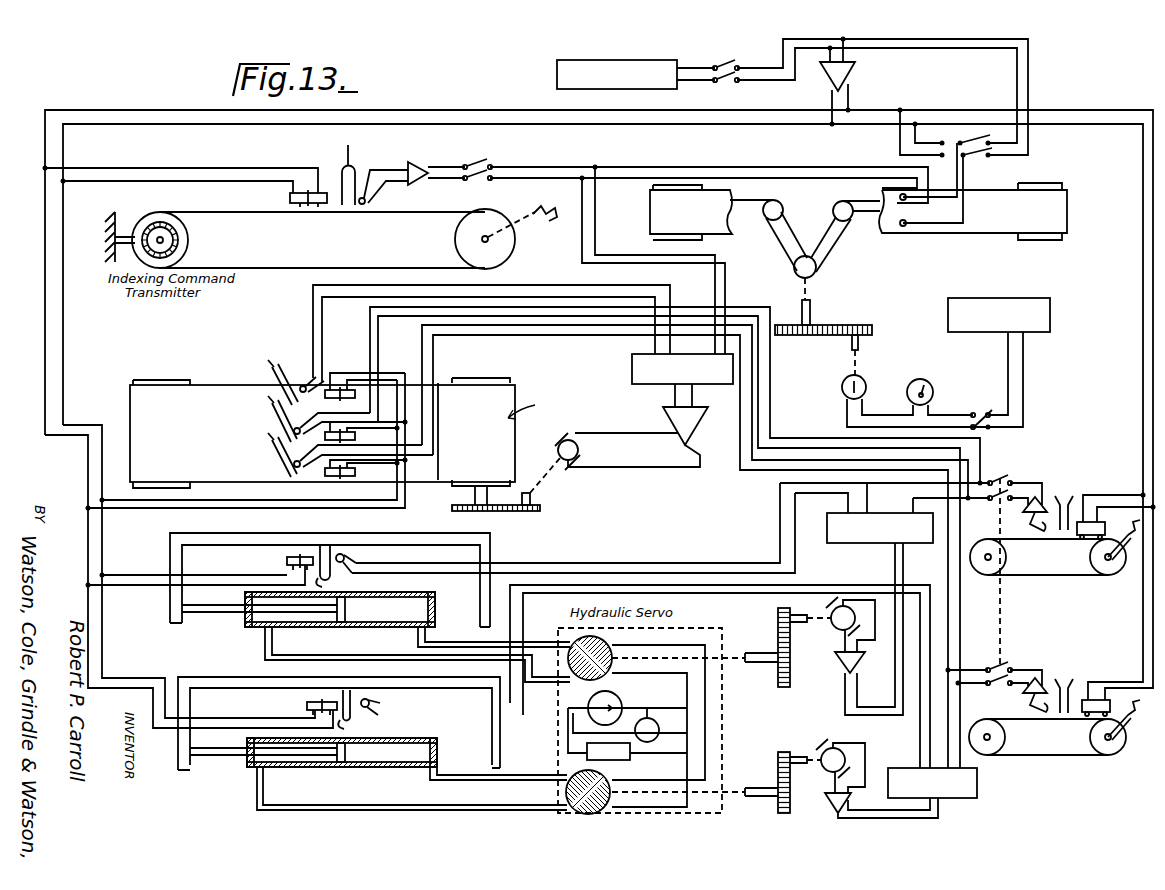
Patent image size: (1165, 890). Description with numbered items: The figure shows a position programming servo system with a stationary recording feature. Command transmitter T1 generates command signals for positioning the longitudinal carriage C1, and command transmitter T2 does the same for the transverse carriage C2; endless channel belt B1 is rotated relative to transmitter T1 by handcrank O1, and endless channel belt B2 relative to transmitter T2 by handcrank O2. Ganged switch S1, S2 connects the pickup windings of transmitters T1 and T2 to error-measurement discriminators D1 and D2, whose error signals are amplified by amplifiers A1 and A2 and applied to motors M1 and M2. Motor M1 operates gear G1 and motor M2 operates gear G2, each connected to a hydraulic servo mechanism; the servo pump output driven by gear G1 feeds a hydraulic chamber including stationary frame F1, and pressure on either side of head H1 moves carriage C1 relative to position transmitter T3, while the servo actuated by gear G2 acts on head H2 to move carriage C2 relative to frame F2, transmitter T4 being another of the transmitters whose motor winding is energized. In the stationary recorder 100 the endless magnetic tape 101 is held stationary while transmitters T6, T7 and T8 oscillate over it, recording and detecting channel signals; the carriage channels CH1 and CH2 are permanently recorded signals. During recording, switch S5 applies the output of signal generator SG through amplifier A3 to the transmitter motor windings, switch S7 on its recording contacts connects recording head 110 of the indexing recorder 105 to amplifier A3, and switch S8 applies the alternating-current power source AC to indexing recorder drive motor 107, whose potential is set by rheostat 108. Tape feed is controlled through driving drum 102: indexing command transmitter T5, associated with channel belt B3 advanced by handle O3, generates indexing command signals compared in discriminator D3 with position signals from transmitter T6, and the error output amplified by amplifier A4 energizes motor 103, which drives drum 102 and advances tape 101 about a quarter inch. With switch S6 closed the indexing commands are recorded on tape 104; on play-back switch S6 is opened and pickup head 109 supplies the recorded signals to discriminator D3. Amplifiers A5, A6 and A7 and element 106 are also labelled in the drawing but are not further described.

The signal generator SG is at (567, 60).
The switch S5 is at (722, 60).
The amplifier A3 is at (852, 66).
The switch S7 is at (972, 130).
The indexing command transmitter T5 is at (357, 170).
The amplifier A7 is at (436, 163).
The switch S6 is at (475, 161).
The channel belt B3 is at (386, 214).
The handle O3 is at (550, 221).
The motor 103 is at (686, 186).
The tape 104 is at (722, 228).
The indexing recorder 105 is at (1060, 187).
The pickup head 109 is at (882, 198).
The recording head 110 is at (882, 232).
The rack 106 is at (779, 337).
The indexing recorder drive motor 107 is at (842, 388).
The rheostat 108 is at (918, 380).
The switch S8 is at (978, 410).
The power supply AC is at (1052, 326).
The stationary recorder 100 is at (130, 388).
The endless magnetic tape 101 is at (443, 392).
The driving drum 102 is at (492, 381).
The position transmitter T6 is at (292, 362).
The transmitter T7 is at (274, 404).
The transmitter T8 is at (274, 446).
The error-measurement discriminator D3 is at (632, 363).
The amplifier A4 is at (667, 418).
The longitudinal carriage C1 is at (172, 534).
The channel CH1 is at (244, 553).
The position transmitter T3 is at (336, 567).
The stationary frame F1 is at (437, 598).
The head H1 is at (341, 627).
The transverse carriage C2 is at (238, 686).
The channel CH2 is at (258, 693).
The transmitter T4 is at (359, 711).
The frame F2 is at (439, 744).
The head H2 is at (341, 767).
The gear G1 is at (778, 620).
The motor M1 is at (840, 624).
The amplifier A1 is at (836, 664).
The gear G2 is at (778, 762).
The motor M2 is at (830, 770).
The amplifier A2 is at (830, 804).
The error-measurement discriminator D1 is at (827, 531).
The error-measurement discriminator D2 is at (895, 768).
The switch S1 is at (999, 478).
The amplifier A5 is at (1024, 512).
The command transmitter T1 is at (1065, 503).
The handcrank O1 is at (1135, 520).
The endless channel belt B1 is at (1063, 548).
The switch S2 is at (995, 665).
The amplifier A6 is at (1038, 677).
The command transmitter T2 is at (1065, 685).
The handcrank O2 is at (1135, 700).
The endless channel belt B2 is at (1008, 720).